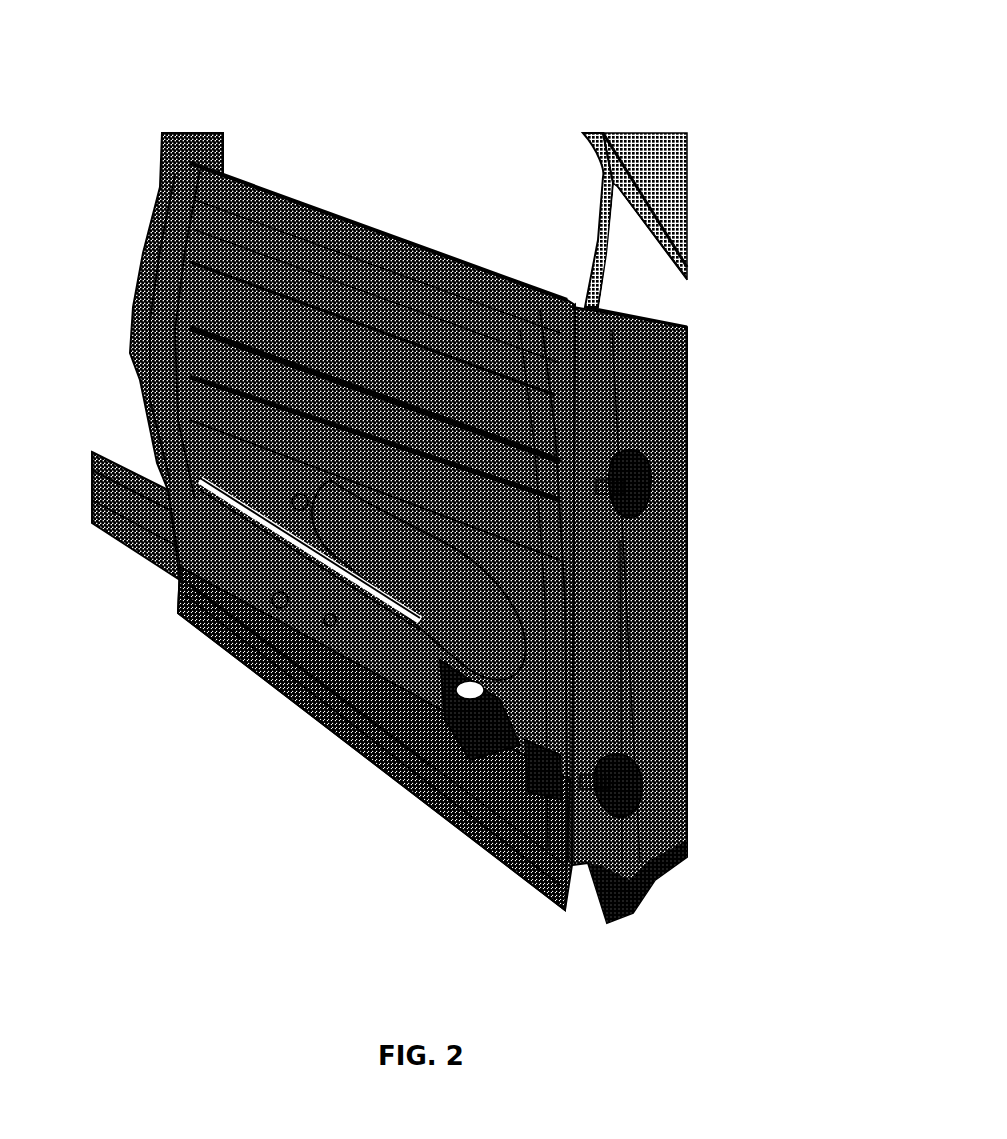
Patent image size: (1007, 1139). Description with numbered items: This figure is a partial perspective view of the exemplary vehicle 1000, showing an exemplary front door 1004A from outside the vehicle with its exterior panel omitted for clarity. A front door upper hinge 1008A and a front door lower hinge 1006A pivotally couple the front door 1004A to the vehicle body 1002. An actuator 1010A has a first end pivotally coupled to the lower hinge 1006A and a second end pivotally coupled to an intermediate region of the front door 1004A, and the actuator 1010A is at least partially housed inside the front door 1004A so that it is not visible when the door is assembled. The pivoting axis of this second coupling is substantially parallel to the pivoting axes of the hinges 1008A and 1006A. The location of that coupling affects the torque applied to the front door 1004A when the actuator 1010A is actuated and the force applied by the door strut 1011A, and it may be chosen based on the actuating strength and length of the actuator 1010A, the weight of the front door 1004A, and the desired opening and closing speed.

The vehicle door system 1000 is at (540, 92).
The vehicle body 1002 is at (665, 393).
The front door 1004A is at (298, 667).
The front door lower hinge 1006A is at (612, 780).
The front door upper hinge 1008A is at (622, 490).
The actuator 1010A is at (478, 723).
The door strut 1011A is at (537, 757).